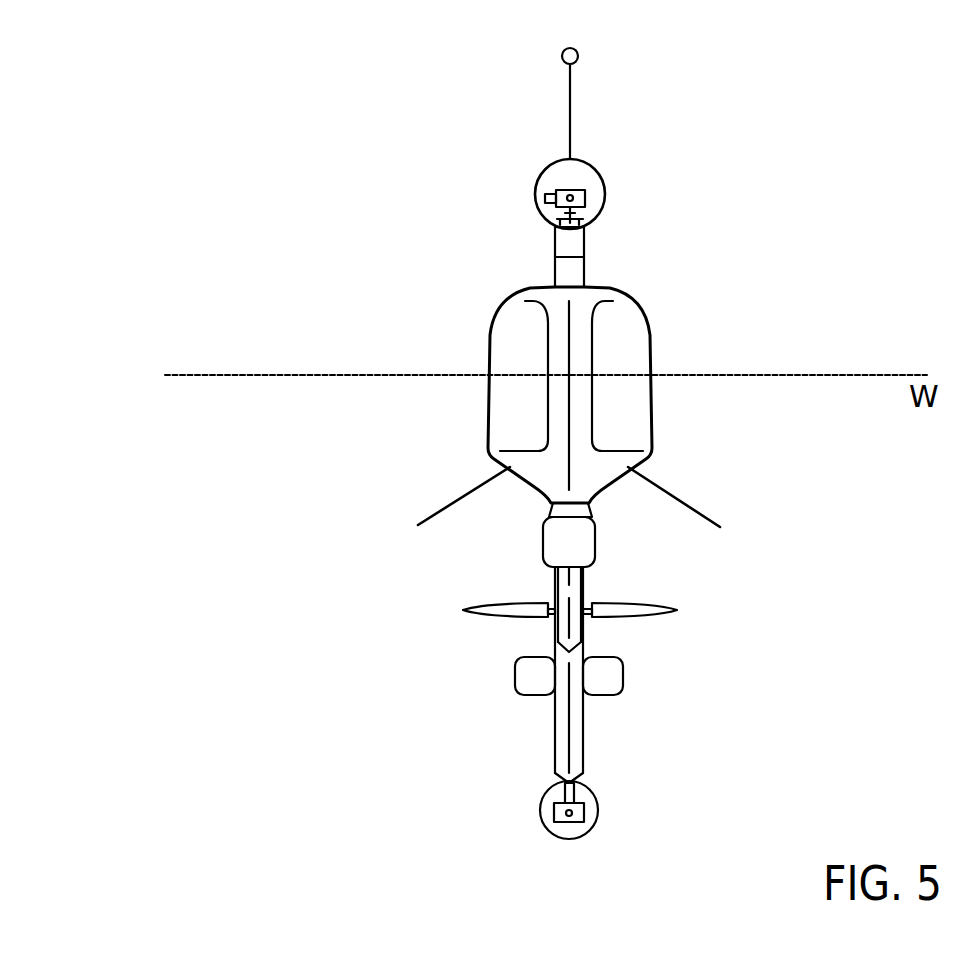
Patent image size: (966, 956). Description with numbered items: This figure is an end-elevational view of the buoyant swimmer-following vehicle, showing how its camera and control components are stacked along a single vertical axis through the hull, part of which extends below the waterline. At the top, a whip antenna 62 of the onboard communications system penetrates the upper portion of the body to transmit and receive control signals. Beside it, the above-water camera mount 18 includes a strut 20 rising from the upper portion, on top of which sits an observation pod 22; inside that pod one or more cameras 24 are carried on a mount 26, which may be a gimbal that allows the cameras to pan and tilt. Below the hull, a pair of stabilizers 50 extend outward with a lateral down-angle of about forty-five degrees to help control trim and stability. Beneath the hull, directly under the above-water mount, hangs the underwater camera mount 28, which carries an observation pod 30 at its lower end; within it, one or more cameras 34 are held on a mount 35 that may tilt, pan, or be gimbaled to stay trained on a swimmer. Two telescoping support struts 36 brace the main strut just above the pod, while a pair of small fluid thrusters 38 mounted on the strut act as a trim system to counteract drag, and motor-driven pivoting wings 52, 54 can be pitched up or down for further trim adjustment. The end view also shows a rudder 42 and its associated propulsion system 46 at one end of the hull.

The above-water camera mount 18 is at (536, 166).
The whip antenna 62 is at (572, 92).
The observation pod 22 is at (597, 167).
The cameras 24 is at (582, 198).
The mount 26 is at (573, 213).
The strut 20 is at (578, 272).
The stabilizers 50 is at (440, 510).
The propulsion system 46 is at (597, 542).
The rudder 42 is at (567, 585).
The pivoting wing 52 is at (468, 613).
The pivoting wing 54 is at (677, 613).
The underwater camera mount 28 is at (550, 631).
The fluid thrusters 38 is at (512, 677).
The telescoping support struts 36 is at (582, 733).
The mount 35 is at (567, 795).
The cameras 34 is at (556, 812).
The observation pod 30 is at (602, 808).